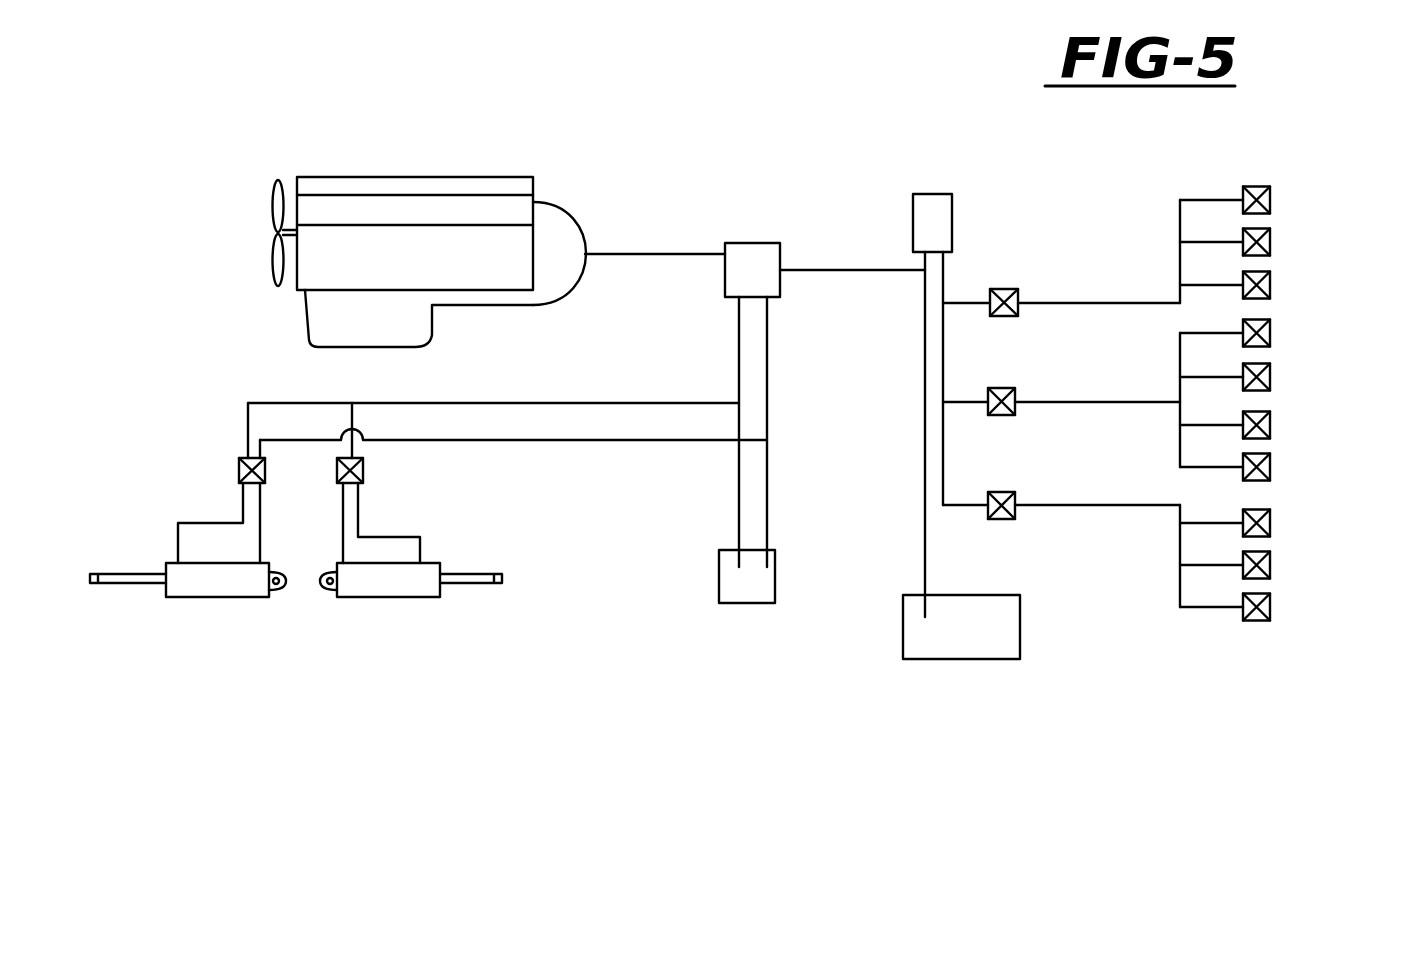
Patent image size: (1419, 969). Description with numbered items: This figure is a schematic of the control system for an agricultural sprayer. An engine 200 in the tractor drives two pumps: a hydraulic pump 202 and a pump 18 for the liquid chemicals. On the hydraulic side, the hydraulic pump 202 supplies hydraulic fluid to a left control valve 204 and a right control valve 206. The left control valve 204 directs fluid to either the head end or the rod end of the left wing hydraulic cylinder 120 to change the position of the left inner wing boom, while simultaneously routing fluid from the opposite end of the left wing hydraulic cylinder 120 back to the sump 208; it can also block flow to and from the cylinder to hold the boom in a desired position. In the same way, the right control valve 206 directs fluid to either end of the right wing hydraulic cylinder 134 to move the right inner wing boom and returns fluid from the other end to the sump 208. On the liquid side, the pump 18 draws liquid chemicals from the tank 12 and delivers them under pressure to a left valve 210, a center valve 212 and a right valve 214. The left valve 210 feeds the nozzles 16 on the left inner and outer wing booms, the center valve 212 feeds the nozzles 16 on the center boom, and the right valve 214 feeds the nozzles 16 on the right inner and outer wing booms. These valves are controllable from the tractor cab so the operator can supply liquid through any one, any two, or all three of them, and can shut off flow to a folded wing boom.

The engine 200 is at (378, 247).
The hydraulic pump 202 is at (767, 243).
The sump 208 is at (719, 580).
The pump 18 is at (927, 194).
The tank 12 is at (1000, 659).
The right valve 214 is at (1013, 289).
The center valve 212 is at (1002, 415).
The left valve 210 is at (1003, 519).
The nozzles 16 is at (1272, 244).
The left control valve 204 is at (238, 470).
The right control valve 206 is at (363, 478).
The left wing hydraulic cylinder 120 is at (230, 587).
The right wing hydraulic cylinder 134 is at (393, 587).